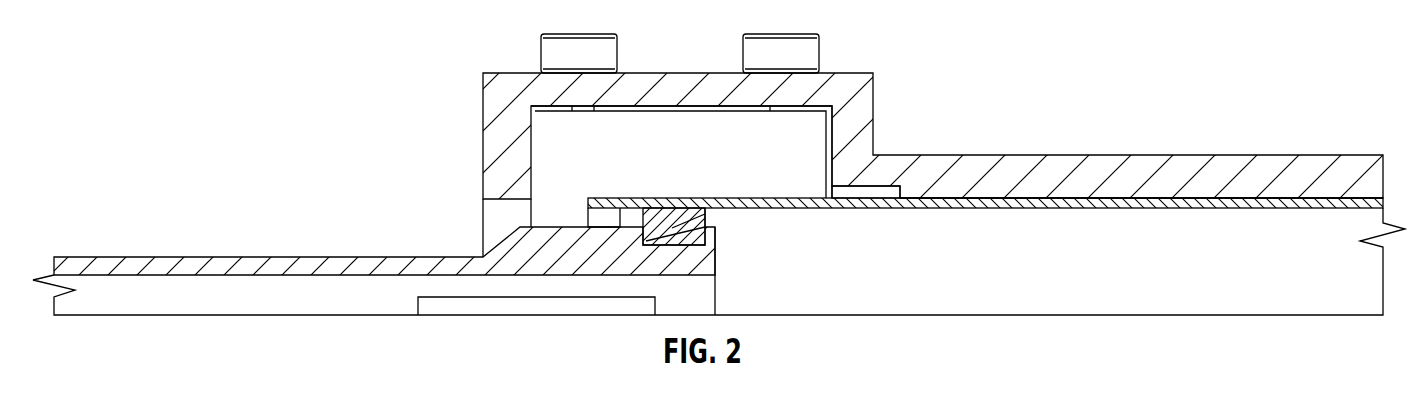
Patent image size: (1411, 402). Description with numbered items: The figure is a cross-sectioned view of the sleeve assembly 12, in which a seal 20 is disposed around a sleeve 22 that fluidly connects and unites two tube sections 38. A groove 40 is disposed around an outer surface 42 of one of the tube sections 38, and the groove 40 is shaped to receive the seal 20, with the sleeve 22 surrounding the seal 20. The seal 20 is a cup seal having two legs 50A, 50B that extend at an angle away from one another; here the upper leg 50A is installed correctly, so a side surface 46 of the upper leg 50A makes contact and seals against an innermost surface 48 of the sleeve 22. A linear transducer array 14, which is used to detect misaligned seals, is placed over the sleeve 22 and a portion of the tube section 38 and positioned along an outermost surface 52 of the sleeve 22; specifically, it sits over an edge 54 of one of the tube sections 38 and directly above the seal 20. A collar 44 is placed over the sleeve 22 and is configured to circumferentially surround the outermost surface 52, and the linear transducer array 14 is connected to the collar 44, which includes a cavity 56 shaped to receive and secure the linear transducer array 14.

The sleeve assembly 12 is at (240, 56).
The linear transducer array 14 is at (665, 143).
The seal 20 is at (714, 219).
The sleeve 22 is at (1128, 203).
The tube section 38 is at (208, 307).
The groove 40 is at (646, 240).
The outer surface 42 is at (222, 255).
The collar 44 is at (968, 168).
The side surface 46 is at (665, 198).
The innermost surface 48 is at (835, 209).
The upper leg 50A is at (703, 204).
The lower leg 50B is at (705, 240).
The outermost surface 52 is at (1013, 188).
The edge 54 is at (717, 272).
The cavity 56 is at (552, 110).